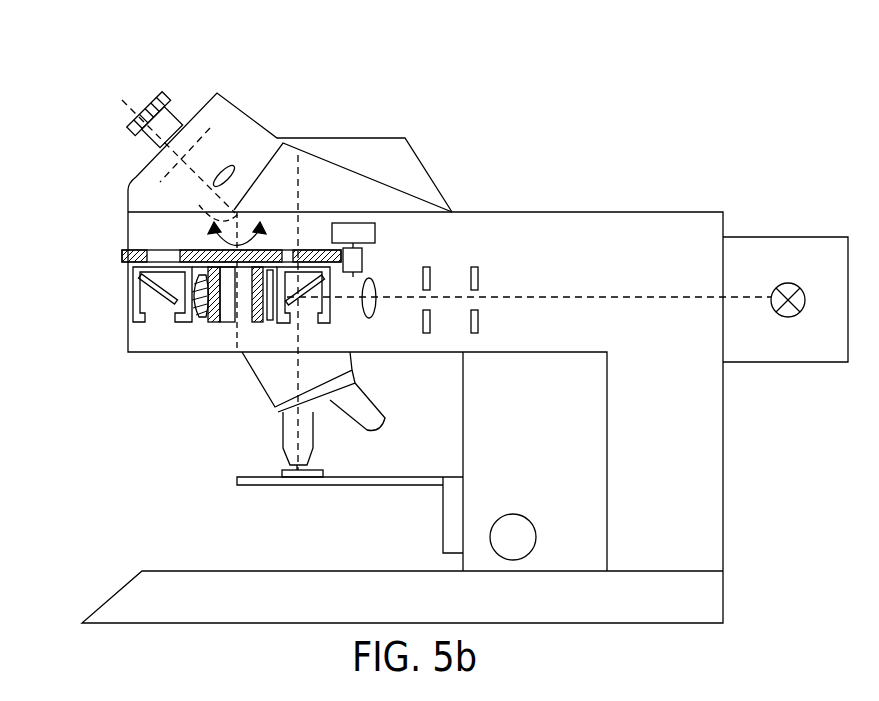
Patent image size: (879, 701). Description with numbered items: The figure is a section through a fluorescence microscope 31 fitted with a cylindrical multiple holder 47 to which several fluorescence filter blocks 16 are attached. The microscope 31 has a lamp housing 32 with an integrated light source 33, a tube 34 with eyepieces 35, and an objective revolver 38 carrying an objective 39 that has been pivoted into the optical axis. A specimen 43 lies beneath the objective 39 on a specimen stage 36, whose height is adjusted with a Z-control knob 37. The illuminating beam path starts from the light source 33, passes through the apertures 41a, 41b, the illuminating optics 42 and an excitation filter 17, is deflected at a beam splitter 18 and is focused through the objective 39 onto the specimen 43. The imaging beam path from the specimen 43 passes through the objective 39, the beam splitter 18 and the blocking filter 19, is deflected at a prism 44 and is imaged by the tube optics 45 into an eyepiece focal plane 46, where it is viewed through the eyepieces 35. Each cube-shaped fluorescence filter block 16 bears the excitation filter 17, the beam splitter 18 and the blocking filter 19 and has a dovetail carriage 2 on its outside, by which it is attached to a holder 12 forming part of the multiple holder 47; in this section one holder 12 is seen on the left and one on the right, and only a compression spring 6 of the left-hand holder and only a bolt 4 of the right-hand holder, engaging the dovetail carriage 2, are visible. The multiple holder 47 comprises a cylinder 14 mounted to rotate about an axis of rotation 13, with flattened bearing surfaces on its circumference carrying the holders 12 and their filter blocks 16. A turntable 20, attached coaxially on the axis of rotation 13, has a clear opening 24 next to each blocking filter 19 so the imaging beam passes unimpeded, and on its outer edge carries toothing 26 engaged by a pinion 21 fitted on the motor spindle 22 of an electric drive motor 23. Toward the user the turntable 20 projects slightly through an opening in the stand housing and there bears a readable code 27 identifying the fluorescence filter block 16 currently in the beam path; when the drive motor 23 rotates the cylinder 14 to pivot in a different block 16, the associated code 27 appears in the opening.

The dovetail carriage 2 is at (211, 322).
The bolt 4 is at (270, 320).
The compression spring 6 is at (199, 320).
The holder 12 is at (183, 323).
The axis of rotation 13 is at (227, 214).
The cylinder 14 is at (222, 322).
The fluorescence filter block 16 is at (133, 322).
The excitation filter 17 is at (133, 297).
The beam splitter 18 is at (168, 306).
The blocking filter 19 is at (150, 249).
The turntable 20 is at (192, 249).
The pinion 21 is at (362, 262).
The motor spindle 22 is at (362, 246).
The electric drive motor 23 is at (356, 228).
The clear opening 24 is at (122, 256).
The toothing 26 is at (132, 268).
The readable code 27 is at (121, 262).
The fluorescence microscope 31 is at (713, 565).
The lamp housing 32 is at (743, 350).
The light source 33 is at (788, 318).
The tube 34 is at (150, 195).
The eyepieces 35 is at (152, 147).
The specimen stage 36 is at (247, 485).
The Z-control knob 37 is at (527, 533).
The objective revolver 38 is at (278, 410).
The objective 39 is at (307, 455).
The aperture 41a is at (474, 267).
The aperture 41b is at (427, 267).
The illuminating optics 42 is at (375, 305).
The specimen 43 is at (290, 478).
The prism 44 is at (236, 170).
The tube optics 45 is at (222, 160).
The eyepiece focal plane 46 is at (191, 126).
The cylindrical multiple holder 47 is at (163, 270).